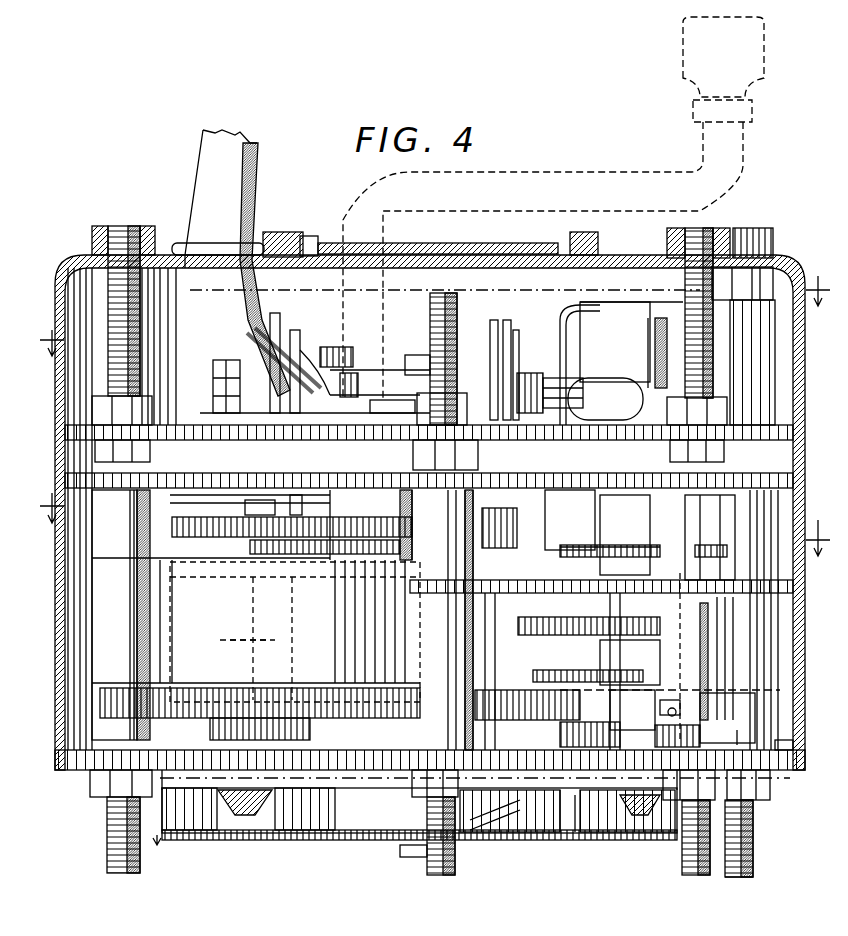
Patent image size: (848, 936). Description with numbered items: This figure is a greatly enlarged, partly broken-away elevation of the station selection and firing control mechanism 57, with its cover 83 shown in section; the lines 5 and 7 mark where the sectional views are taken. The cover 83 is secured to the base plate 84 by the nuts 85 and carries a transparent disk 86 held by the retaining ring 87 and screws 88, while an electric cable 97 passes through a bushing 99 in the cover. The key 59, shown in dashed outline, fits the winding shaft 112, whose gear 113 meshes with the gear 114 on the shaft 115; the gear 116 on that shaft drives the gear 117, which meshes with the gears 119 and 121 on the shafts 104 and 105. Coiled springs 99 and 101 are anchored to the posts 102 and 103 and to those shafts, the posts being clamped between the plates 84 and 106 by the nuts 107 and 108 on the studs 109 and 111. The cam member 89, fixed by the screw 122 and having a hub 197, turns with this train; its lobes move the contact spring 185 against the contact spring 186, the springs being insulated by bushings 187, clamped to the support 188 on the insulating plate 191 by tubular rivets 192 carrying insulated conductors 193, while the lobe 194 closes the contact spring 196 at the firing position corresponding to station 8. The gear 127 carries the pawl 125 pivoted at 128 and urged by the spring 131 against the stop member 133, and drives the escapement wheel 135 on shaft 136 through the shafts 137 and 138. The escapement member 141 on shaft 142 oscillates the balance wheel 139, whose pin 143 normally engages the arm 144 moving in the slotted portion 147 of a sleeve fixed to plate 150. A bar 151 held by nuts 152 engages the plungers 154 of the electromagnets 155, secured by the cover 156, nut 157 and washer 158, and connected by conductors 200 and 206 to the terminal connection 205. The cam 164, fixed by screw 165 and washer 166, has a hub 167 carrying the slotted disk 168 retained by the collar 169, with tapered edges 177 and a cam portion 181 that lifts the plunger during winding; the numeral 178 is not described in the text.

The section line 5— 5 is at (435, 306).
The section line 7— 7 is at (435, 516).
The station 8 is at (446, 789).
The station selection and firing control mechanism 57 is at (168, 245).
The key 59 is at (752, 85).
The cover 83 is at (75, 255).
The base plate 84 is at (770, 775).
The nuts 85 is at (112, 226).
The transparent disk 86 is at (503, 243).
The retaining ring 87 is at (268, 242).
The screws 88 is at (310, 235).
The cam member 89 is at (428, 360).
The electric cable 97 is at (265, 140).
The bushing / coiled spring 99 is at (220, 250).
The coiled spring 101 is at (568, 555).
The post 102 is at (256, 615).
The post 103 is at (755, 810).
The shaft 104 is at (335, 770).
The shaft 105 is at (548, 495).
The plate 106 is at (638, 476).
The nut 107 is at (95, 785).
The nut 108 is at (132, 480).
The stud 109 is at (130, 873).
The stud 111 is at (740, 880).
The winding shaft 112 is at (445, 431).
The gear 113 is at (400, 548).
The gear 114 is at (215, 577).
The shaft 115 is at (235, 641).
The gear 116 is at (228, 688).
The gear 117 is at (420, 720).
The gear 119 is at (322, 688).
The gear 121 is at (560, 830).
The screw 122 is at (430, 300).
The pawl 125 is at (270, 530).
The gear 127 is at (238, 537).
The pivot 128 is at (255, 530).
The spring 131 is at (300, 515).
The stop member 133 is at (386, 525).
The escapement wheel 135 is at (545, 673).
The shaft 136 is at (640, 580).
The shaft 137 is at (580, 612).
The shaft 138 is at (512, 625).
The balance wheel 139 is at (660, 722).
The escapement member 141 is at (700, 668).
The shaft 142 is at (665, 655).
The pin 143 is at (660, 714).
The arm 144 is at (700, 710).
The slotted portion 147 is at (690, 690).
The plate 150 is at (558, 582).
The bar 151 is at (640, 545).
The nuts 152 is at (665, 525).
The plungers 154 is at (705, 440).
The electromagnets 155 is at (645, 310).
The cover 156 is at (660, 315).
The nut 157 is at (775, 255).
The washer 158 is at (790, 300).
The cam 164 is at (615, 835).
The screw 165 is at (415, 858).
The washer 166 is at (400, 850).
The hub 167 is at (505, 835).
The slotted disk 168 is at (205, 833).
The collar 169 is at (350, 845).
The tapered edge 177 is at (225, 845).
The nut 178 is at (275, 833).
The cam portion 181 is at (245, 820).
The contact spring 185 is at (280, 340).
The contact spring 186 is at (250, 325).
The bushings 187 is at (240, 345).
The support 188 is at (355, 375).
The plate 191 is at (545, 378).
The tubular rivets 192 is at (385, 405).
The insulated conductors 193 is at (305, 350).
The lobe 194 is at (345, 350).
The contact spring 196 is at (490, 330).
The hub 197 is at (520, 370).
The conductor 200 is at (562, 325).
The terminal connection 205 is at (697, 411).
The conductor 206 is at (648, 335).